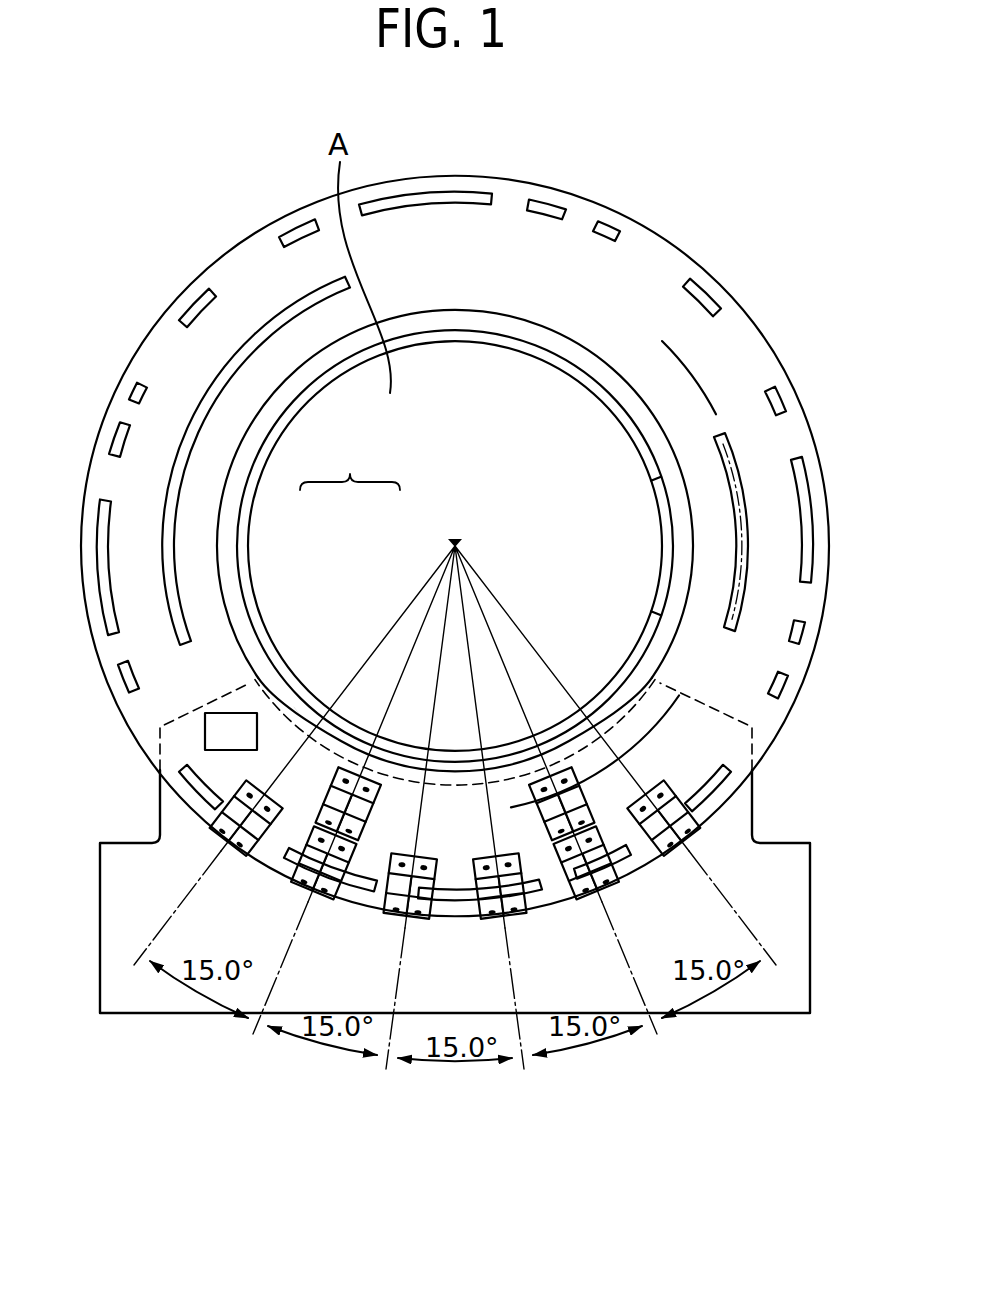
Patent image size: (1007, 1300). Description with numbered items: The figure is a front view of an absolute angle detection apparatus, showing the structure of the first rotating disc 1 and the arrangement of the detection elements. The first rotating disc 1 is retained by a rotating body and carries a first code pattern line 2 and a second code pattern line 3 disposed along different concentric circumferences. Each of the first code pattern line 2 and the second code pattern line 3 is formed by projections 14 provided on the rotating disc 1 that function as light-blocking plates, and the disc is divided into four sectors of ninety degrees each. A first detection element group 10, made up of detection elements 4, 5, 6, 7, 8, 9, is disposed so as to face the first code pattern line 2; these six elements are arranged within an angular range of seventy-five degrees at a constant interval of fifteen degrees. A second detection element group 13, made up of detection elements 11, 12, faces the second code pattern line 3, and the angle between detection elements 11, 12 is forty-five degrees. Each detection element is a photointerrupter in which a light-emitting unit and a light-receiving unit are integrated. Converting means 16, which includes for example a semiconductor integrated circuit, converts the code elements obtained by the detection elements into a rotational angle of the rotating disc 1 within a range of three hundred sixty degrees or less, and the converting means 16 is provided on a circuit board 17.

The first rotating disc 1 is at (615, 290).
The first code pattern line 2 is at (700, 256).
The second code pattern line 3 is at (714, 414).
The detection element 4 is at (673, 850).
The detection element 5 is at (587, 890).
The detection element 6 is at (503, 915).
The detection element 7 is at (407, 915).
The detection element 8 is at (323, 890).
The detection element 9 is at (225, 983).
The first detection element group 10 is at (450, 1007).
The detection element 11 is at (452, 546).
The detection element 12 is at (318, 805).
The second detection element group 13 is at (350, 464).
The projections 14 is at (213, 377).
The converting means 16 is at (227, 738).
The circuit board 17 is at (100, 910).